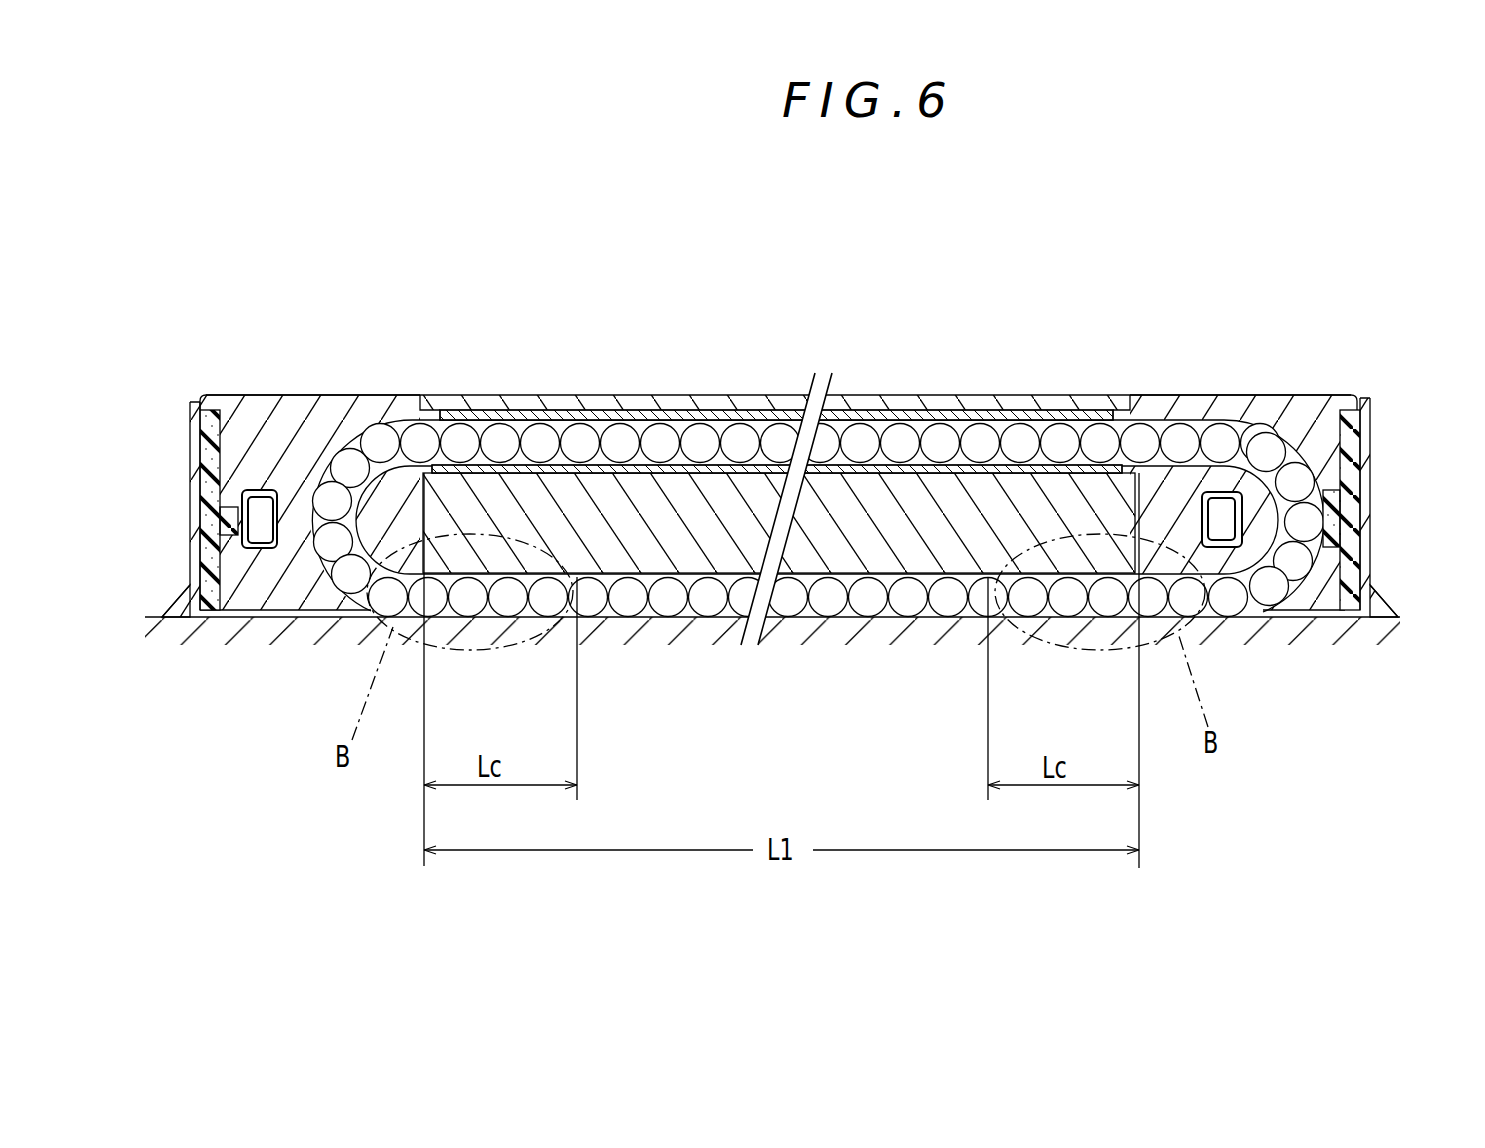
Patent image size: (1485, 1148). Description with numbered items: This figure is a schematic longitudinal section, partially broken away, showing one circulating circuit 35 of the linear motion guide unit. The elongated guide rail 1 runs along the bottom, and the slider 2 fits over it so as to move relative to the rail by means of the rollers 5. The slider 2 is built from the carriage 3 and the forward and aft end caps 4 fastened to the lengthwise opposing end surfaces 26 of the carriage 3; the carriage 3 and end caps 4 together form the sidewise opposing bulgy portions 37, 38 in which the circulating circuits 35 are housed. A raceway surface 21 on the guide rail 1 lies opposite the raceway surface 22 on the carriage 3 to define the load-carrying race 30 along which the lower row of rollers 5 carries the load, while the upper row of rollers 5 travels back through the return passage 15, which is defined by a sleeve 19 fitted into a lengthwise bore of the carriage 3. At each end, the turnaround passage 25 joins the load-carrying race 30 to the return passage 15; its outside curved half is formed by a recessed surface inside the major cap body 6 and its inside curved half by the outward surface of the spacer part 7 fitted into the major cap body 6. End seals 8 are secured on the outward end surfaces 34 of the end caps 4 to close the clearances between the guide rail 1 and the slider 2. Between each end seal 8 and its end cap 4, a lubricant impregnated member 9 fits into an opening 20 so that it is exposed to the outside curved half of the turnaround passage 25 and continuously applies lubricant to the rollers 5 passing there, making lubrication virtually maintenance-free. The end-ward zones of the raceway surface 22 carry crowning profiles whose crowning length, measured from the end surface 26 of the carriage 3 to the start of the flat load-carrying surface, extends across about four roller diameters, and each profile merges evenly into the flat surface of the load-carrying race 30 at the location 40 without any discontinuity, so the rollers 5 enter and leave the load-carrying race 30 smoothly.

The guide rail 1 is at (298, 630).
The slider 2 is at (1070, 392).
The carriage 3 is at (707, 400).
The end cap 4 is at (332, 415).
The roller 5 is at (257, 505).
The major cap body 6 is at (295, 415).
The spacer part 7 is at (388, 497).
The end seal 8 is at (190, 447).
The lubricant impregnated member 9 is at (212, 400).
The return passage 15 is at (562, 420).
The sleeve 19 is at (472, 412).
The opening 20 is at (230, 615).
The raceway surface 21 is at (820, 605).
The raceway surface 22 is at (857, 590).
The turnaround passage 25 is at (358, 420).
The end surface 26 is at (420, 395).
The load-carrying race 30 is at (975, 603).
The outward end surface 34 is at (198, 477).
The circulating circuit 35 is at (850, 418).
The bulgy portion 37 is at (1003, 515).
The bulgy portion 38 is at (277, 418).
The location 40 is at (545, 603).